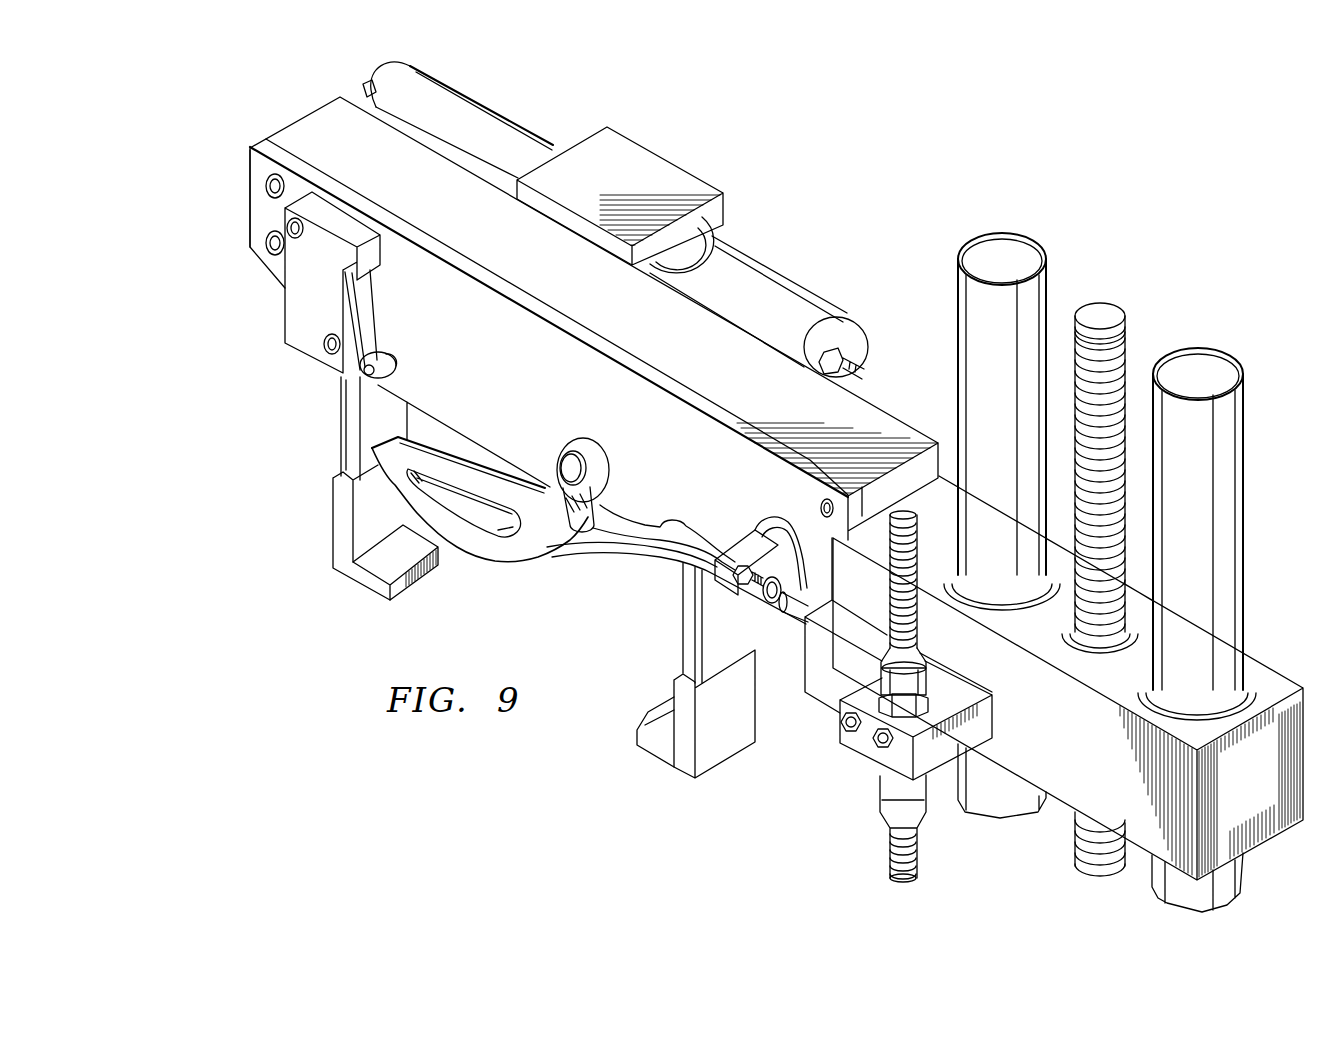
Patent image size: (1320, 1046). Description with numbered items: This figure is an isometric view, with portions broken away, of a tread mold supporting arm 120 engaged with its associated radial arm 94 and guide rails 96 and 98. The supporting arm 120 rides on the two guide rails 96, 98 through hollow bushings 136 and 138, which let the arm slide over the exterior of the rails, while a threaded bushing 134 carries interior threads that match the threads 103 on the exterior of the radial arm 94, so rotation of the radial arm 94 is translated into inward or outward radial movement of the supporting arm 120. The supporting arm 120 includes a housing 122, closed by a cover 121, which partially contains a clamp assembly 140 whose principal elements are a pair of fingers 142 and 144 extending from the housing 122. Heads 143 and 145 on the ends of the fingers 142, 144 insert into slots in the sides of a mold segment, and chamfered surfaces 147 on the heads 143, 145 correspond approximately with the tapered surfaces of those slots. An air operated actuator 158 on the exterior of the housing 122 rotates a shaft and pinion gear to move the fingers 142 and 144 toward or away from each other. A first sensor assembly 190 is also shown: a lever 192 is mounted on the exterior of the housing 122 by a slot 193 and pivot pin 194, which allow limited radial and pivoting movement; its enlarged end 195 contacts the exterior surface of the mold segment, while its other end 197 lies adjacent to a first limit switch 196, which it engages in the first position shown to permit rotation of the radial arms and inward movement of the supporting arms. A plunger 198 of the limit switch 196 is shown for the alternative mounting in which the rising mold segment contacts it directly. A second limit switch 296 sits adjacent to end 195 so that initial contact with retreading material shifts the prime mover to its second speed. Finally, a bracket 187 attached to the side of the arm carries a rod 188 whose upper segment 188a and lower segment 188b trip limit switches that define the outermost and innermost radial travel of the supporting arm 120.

The tread mold supporting arm 120 is at (815, 180).
The cover 121 is at (263, 256).
The housing 122 is at (316, 111).
The threaded bushing 134 is at (1040, 640).
The hollow bushing 136 is at (955, 555).
The hollow bushing 138 is at (1257, 686).
The clamp assembly 140 is at (278, 315).
The finger 142 is at (341, 446).
The head 143 is at (358, 578).
The finger 144 is at (688, 622).
The head 145 is at (652, 752).
The chamfered surfaces 147 is at (362, 554).
The actuator 158 is at (658, 149).
The bracket 187 is at (945, 676).
The rod 188 is at (901, 646).
The rod segment 188a is at (902, 515).
The rod segment 188b is at (887, 880).
The first sensor assembly 190 is at (677, 577).
The lever 192 is at (553, 497).
The slot 193 is at (556, 470).
The pivot pin 194 is at (573, 458).
The end of lever 195 is at (487, 552).
The first limit switch 196 is at (829, 697).
The end of lever 197 is at (744, 531).
The plunger 198 is at (772, 610).
The second limit switch 296 is at (290, 305).
The radial arm 94 is at (1097, 301).
The guide rail 96 is at (1000, 238).
The guide rail 98 is at (1226, 362).
The threads 103 is at (1122, 323).